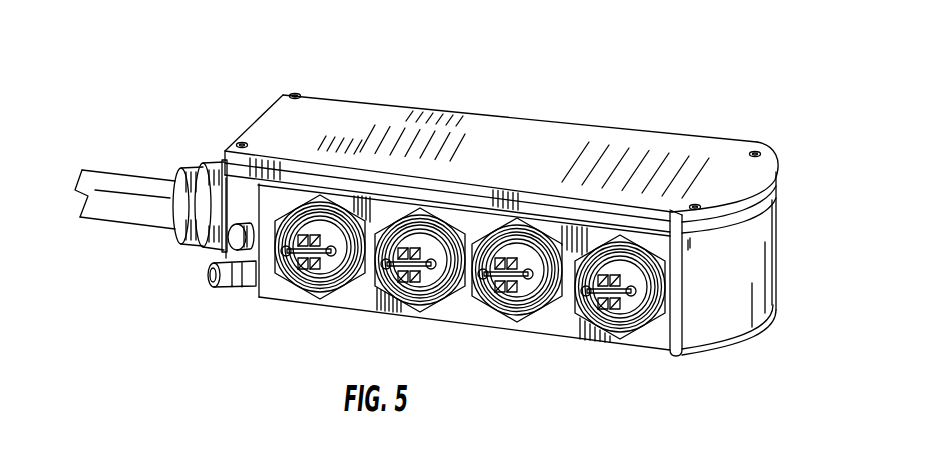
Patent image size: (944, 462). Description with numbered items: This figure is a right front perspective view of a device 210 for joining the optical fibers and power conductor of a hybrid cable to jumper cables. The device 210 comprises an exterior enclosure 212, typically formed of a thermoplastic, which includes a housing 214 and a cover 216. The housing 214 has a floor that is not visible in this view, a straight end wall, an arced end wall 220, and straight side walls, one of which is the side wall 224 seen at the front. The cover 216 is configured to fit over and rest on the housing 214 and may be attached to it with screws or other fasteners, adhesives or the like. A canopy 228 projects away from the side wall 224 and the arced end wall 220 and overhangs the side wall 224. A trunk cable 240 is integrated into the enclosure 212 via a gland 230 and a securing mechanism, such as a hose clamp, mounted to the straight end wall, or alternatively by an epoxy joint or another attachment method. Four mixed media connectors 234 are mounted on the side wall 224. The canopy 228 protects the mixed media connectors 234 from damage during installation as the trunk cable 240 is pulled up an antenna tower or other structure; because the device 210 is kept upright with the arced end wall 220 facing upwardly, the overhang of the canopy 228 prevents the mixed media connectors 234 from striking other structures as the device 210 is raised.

The device 210 is at (350, 54).
The exterior enclosure 212 is at (788, 351).
The housing 214 is at (628, 375).
The cover 216 is at (718, 160).
The arced end wall 220 is at (752, 277).
The side wall 224 is at (360, 292).
The canopy 228 is at (688, 358).
The gland 230 is at (180, 237).
The mixed media connectors 234 is at (548, 302).
The trunk cable 240 is at (147, 180).